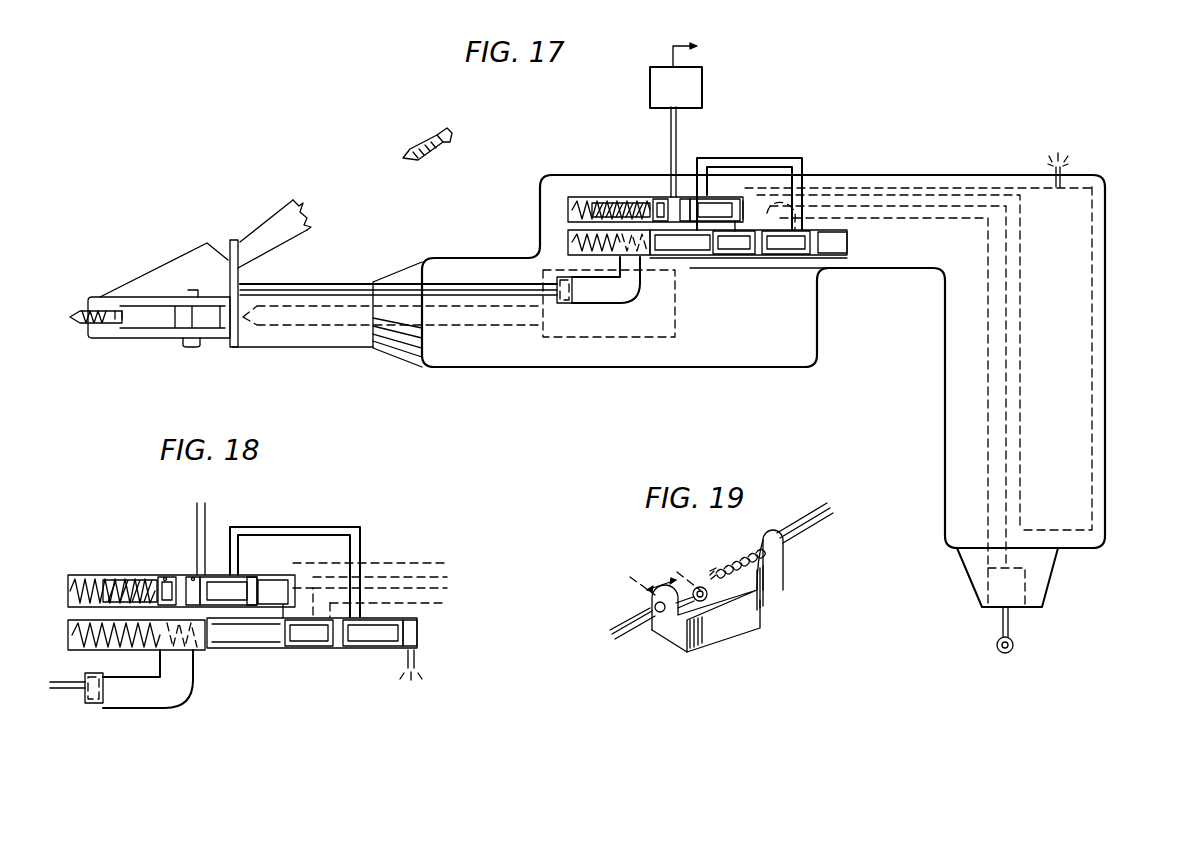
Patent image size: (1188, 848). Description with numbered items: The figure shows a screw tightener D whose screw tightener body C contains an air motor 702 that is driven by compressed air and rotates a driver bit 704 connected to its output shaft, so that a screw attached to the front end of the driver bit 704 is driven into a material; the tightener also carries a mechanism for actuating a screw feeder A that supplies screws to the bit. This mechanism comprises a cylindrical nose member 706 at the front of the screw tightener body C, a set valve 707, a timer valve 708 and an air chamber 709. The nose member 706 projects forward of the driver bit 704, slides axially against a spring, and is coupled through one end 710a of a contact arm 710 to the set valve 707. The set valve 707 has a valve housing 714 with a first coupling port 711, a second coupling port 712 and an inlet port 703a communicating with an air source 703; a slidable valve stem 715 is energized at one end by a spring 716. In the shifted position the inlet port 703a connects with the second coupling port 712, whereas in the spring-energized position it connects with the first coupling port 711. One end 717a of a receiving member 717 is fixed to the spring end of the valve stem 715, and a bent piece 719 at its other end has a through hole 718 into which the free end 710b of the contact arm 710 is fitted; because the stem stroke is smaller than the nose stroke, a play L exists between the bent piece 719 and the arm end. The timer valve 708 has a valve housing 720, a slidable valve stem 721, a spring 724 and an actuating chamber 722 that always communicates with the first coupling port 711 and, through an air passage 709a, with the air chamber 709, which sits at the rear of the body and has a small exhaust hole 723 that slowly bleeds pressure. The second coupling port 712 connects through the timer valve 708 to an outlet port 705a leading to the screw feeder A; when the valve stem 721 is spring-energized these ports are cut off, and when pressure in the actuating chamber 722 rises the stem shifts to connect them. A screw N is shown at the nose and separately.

In FIG. 17, the air motor 702 is at (608, 338).
In FIG. 17, the air source 703 is at (1013, 650).
In FIG. 17, the inlet port 703a is at (887, 218).
In FIG. 18, the inlet port 703a is at (420, 604).
In FIG. 17, the driver bit 704 is at (357, 323).
In FIG. 17, the outlet port 705a is at (675, 152).
In FIG. 18, the outlet port 705a is at (205, 512).
In FIG. 17, the nose member 706 is at (165, 297).
In FIG. 17, the set valve 707 is at (782, 258).
In FIG. 17, the timer valve 708 is at (657, 193).
In FIG. 18, the timer valve 708 is at (179, 591).
In FIG. 17, the air chamber 709 is at (1092, 360).
In FIG. 17, the air passage 709a is at (868, 187).
In FIG. 18, the air passage 709a is at (385, 563).
In FIG. 17, the contact arm 710 is at (345, 289).
In FIG. 19, the contact arm 710 is at (622, 628).
In FIG. 17, the one end of contact arm 710a is at (243, 282).
In FIG. 17, the end of contact arm 710b is at (549, 300).
In FIG. 19, the end of contact arm 710b is at (680, 572).
In FIG. 17, the first coupling port 711 is at (735, 223).
In FIG. 18, the first coupling port 711 is at (283, 610).
In FIG. 17, the second coupling port 712 is at (778, 158).
In FIG. 18, the second coupling port 712 is at (300, 527).
In FIG. 17, the valve housing 714 is at (810, 300).
In FIG. 17, the valve stem 715 is at (740, 256).
In FIG. 18, the valve stem 715 is at (318, 642).
In FIG. 19, the valve stem 715 is at (793, 537).
In FIG. 17, the spring 716 is at (572, 244).
In FIG. 18, the spring 716 is at (120, 642).
In FIG. 17, the receiving member 717 is at (593, 297).
In FIG. 18, the receiving member 717 is at (150, 697).
In FIG. 19, the receiving member 717 is at (745, 628).
In FIG. 19, the one end of receiving member 717a is at (775, 582).
In FIG. 19, the through hole 718 is at (660, 615).
In FIG. 19, the bent piece 719 is at (683, 652).
In FIG. 17, the valve housing 720 is at (633, 197).
In FIG. 17, the valve stem 721 is at (712, 203).
In FIG. 18, the valve stem 721 is at (215, 585).
In FIG. 17, the actuating chamber 722 is at (752, 204).
In FIG. 18, the actuating chamber 722 is at (270, 588).
In FIG. 17, the small exhaust hole 723 is at (1062, 185).
In FIG. 17, the spring 724 is at (608, 207).
In FIG. 18, the spring 724 is at (108, 582).
In FIG. 17, the screw feeder A is at (702, 87).
In FIG. 17, the screw tightener body C is at (945, 398).
In FIG. 17, the screw tightener D is at (578, 158).
In FIG. 19, the play L is at (665, 578).
In FIG. 17, the nail N is at (106, 332).